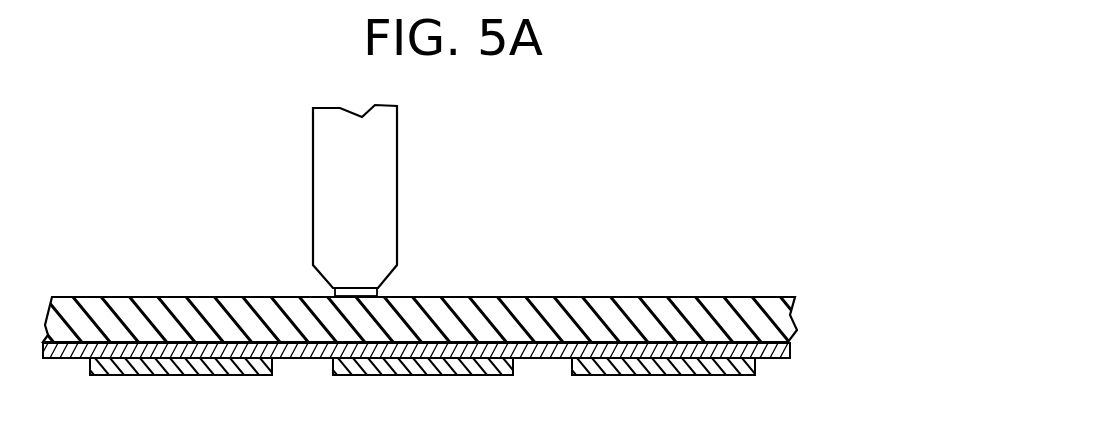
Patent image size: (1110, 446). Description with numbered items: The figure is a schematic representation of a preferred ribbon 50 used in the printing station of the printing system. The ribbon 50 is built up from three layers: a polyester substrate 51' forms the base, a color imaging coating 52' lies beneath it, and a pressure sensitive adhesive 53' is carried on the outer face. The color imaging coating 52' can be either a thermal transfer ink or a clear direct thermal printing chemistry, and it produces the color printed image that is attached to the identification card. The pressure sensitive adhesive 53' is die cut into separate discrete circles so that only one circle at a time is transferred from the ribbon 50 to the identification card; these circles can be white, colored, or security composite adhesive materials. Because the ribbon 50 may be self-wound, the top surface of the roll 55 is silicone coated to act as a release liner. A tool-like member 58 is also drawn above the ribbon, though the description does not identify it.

The ribbon 50 is at (588, 246).
The polyester substrate 51' is at (433, 312).
The color imaging coating 52' is at (466, 343).
The pressure sensitive adhesive 53' is at (469, 376).
The top surface of the roll 55 is at (479, 296).
The tool / dispensing head 58 is at (387, 168).